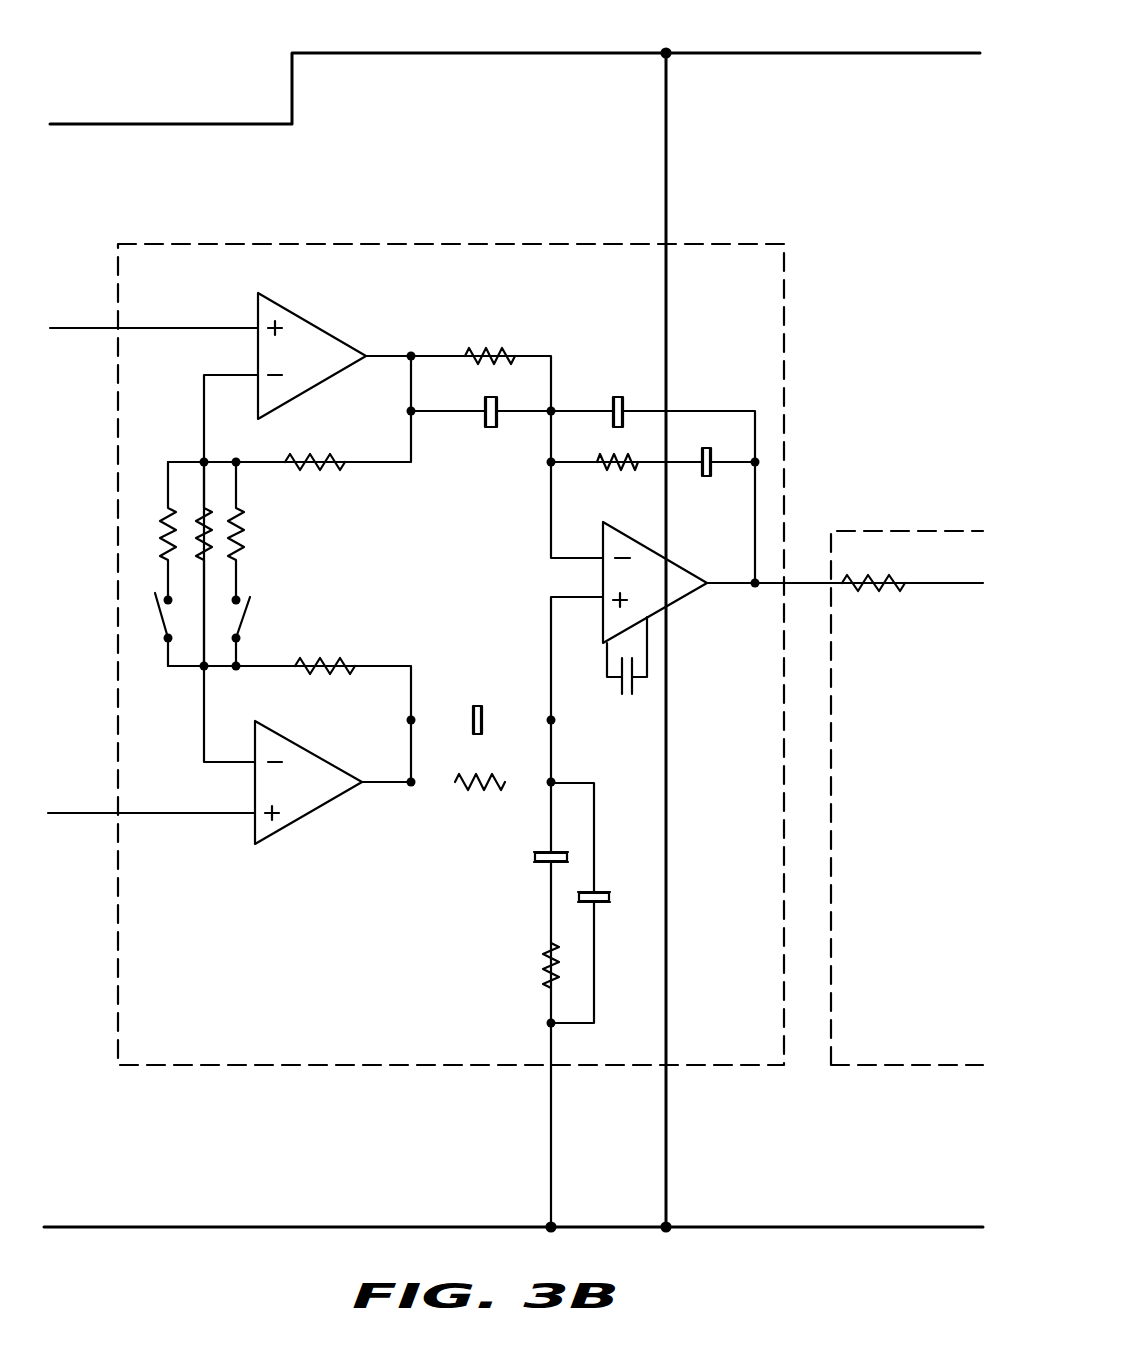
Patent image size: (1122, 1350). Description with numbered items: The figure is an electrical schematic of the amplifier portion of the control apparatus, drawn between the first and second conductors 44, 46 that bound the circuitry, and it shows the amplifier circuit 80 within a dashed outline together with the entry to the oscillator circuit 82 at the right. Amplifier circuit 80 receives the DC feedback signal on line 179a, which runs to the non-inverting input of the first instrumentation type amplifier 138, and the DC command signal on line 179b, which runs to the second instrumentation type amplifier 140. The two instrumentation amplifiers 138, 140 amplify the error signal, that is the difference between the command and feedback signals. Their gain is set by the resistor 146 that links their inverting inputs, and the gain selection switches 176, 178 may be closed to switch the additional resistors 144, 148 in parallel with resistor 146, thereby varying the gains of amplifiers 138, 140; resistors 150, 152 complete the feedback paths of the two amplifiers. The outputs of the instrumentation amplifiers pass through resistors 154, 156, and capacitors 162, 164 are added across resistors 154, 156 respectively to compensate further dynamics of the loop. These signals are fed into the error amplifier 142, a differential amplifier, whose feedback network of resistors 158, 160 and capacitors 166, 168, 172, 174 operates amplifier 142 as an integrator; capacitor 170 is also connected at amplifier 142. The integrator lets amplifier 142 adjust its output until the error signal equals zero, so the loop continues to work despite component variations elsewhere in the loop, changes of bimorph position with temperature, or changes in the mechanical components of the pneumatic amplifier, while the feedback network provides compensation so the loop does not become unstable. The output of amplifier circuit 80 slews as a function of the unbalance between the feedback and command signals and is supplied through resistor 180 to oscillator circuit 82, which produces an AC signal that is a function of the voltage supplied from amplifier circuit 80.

The first conductor 44 is at (533, 52).
The second conductor 46 is at (150, 1228).
The amplifier circuit 80 is at (765, 243).
The oscillator circuit 82 is at (930, 1068).
The line 179a is at (73, 327).
The line 179b is at (72, 812).
The instrumentation type amplifier 138 is at (302, 317).
The instrumentation type amplifier 140 is at (282, 830).
The error amplifier 142 is at (690, 598).
The resistor 144 is at (165, 530).
The resistor 146 is at (210, 527).
The resistor 148 is at (240, 540).
The resistor 150 is at (333, 457).
The resistor 152 is at (323, 655).
The resistor 154 is at (495, 340).
The resistor 156 is at (477, 790).
The resistor 158 is at (638, 464).
The resistor 160 is at (547, 973).
The capacitor 162 is at (492, 430).
The capacitor 164 is at (477, 705).
The capacitor 166 is at (618, 393).
The capacitor 168 is at (703, 445).
The capacitor 170 is at (627, 697).
The capacitor 172 is at (530, 860).
The capacitor 174 is at (612, 900).
The gain selection switch 176 is at (160, 618).
The gain selection switch 178 is at (247, 617).
The resistor 180 is at (880, 590).